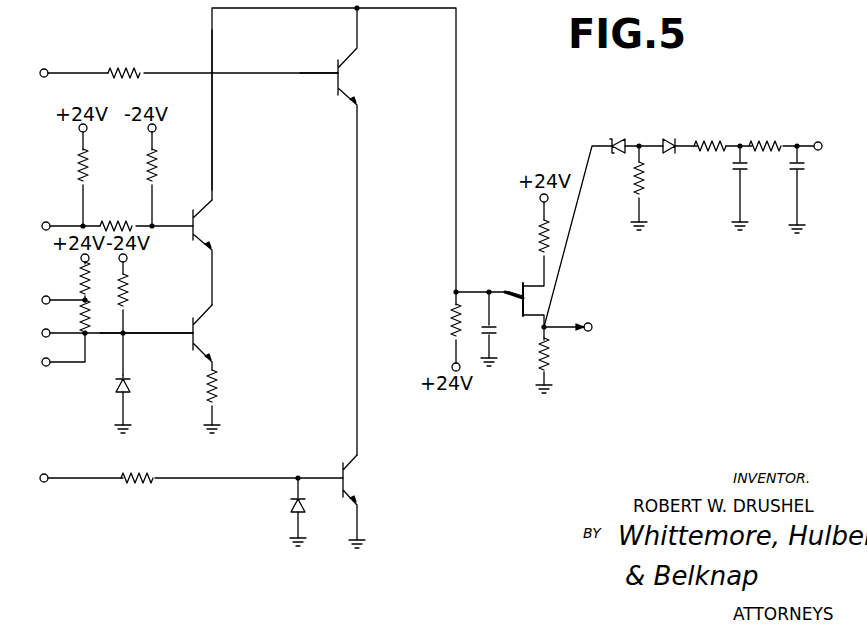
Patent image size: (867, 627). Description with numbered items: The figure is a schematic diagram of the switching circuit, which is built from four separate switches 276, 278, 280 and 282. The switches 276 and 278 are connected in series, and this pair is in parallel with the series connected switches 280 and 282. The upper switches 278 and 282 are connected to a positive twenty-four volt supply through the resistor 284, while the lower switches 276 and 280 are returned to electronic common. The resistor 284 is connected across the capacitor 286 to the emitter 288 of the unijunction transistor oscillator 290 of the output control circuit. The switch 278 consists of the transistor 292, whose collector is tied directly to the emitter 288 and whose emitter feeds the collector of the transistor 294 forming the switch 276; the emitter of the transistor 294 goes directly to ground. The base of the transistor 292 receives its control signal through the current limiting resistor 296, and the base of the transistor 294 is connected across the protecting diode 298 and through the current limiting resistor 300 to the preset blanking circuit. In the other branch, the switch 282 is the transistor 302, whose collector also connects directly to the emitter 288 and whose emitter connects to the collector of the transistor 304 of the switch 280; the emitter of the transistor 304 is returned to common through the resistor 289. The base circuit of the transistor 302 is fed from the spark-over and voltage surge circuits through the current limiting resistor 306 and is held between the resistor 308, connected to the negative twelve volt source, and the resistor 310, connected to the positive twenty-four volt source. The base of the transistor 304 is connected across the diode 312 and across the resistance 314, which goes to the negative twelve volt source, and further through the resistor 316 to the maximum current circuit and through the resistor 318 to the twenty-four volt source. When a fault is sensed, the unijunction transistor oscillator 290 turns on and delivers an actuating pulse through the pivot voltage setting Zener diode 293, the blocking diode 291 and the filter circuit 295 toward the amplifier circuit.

The switch 276 is at (322, 478).
The switch 278 is at (320, 73).
The switch 280 is at (140, 334).
The switch 282 is at (213, 126).
The resistor 284 is at (452, 316).
The capacitor 286 is at (497, 339).
The emitter 288 is at (514, 262).
The resistor 289 is at (218, 388).
The unijunction transistor oscillator 290 is at (522, 303).
The blocking diode 291 is at (678, 140).
The transistor 292 is at (341, 68).
The pivot voltage setting Zener diode 293 is at (620, 140).
The transistor 294 is at (346, 472).
The filter circuit 295 is at (775, 143).
The current limiting resistor 296 is at (160, 72).
The protecting diode 298 is at (293, 505).
The current limiting resistor 300 is at (153, 480).
The transistor 302 is at (197, 219).
The transistor 304 is at (195, 328).
The current limiting resistor 306 is at (117, 209).
The resistor 308 is at (149, 166).
The resistor 310 is at (79, 166).
The diode 312 is at (130, 383).
The resistance 314 is at (128, 297).
The resistor 316 is at (82, 318).
The resistor 318 is at (82, 277).